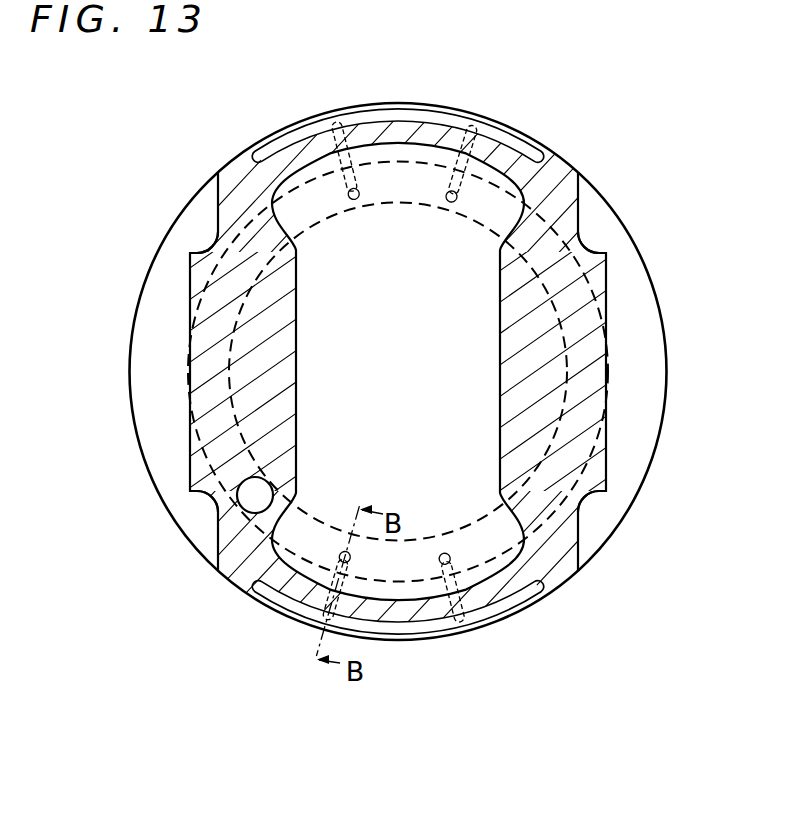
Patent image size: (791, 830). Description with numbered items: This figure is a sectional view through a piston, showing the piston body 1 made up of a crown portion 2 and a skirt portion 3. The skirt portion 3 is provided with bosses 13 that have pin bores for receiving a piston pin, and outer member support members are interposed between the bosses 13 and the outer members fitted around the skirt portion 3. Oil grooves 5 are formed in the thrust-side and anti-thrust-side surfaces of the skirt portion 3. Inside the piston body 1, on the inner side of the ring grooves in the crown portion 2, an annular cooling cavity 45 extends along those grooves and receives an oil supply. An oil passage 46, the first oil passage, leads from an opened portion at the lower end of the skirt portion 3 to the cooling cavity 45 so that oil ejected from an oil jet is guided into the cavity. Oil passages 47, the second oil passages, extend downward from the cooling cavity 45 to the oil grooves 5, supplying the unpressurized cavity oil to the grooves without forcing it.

The piston body 1 is at (388, 415).
The crown portion 2 is at (637, 333).
The skirt portion 3 is at (373, 135).
The oil grooves 5 is at (402, 117).
The bosses 13 is at (202, 473).
The cooling cavity 45 is at (580, 408).
The oil passage 46 is at (253, 507).
The oil passages 47 is at (313, 132).